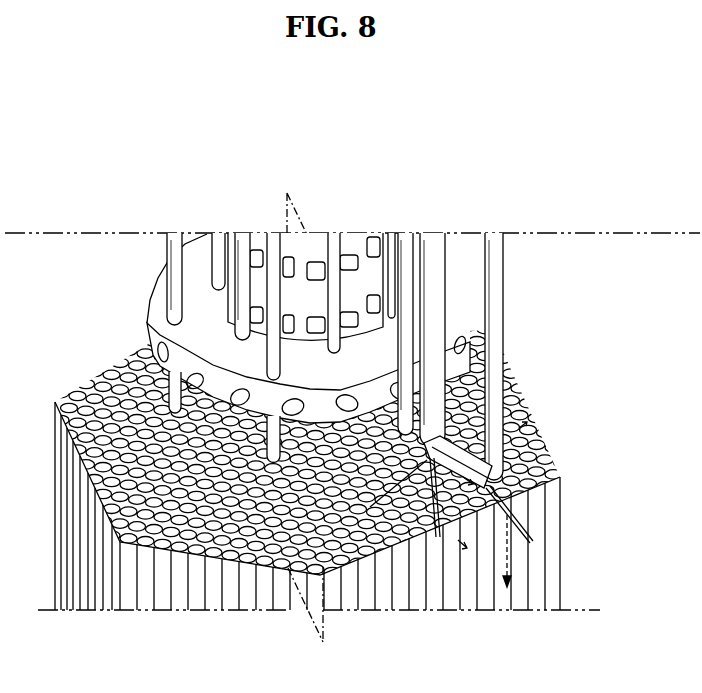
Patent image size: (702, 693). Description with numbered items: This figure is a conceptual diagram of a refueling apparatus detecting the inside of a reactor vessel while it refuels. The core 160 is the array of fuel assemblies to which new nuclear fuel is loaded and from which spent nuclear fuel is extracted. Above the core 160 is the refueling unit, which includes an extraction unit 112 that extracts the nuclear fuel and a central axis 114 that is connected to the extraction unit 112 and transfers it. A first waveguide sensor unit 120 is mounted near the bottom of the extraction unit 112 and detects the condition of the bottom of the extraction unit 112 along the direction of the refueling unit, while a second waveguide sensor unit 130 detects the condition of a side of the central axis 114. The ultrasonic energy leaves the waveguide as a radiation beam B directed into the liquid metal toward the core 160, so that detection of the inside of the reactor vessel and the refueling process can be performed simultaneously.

The extraction unit 112 is at (495, 350).
The central axis 114 is at (433, 308).
The first waveguide sensor unit 120 is at (532, 515).
The second waveguide sensor unit 130 is at (422, 538).
The core 160 is at (557, 553).
The radiation beam B is at (507, 565).